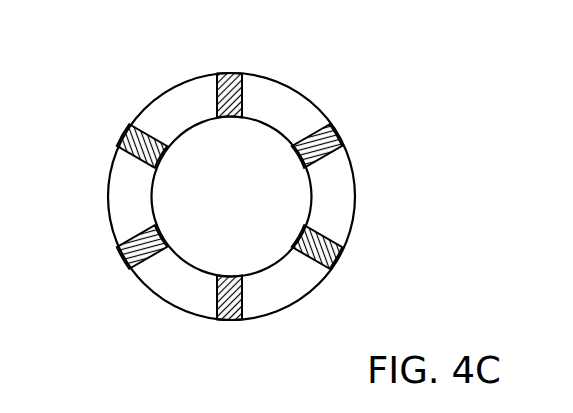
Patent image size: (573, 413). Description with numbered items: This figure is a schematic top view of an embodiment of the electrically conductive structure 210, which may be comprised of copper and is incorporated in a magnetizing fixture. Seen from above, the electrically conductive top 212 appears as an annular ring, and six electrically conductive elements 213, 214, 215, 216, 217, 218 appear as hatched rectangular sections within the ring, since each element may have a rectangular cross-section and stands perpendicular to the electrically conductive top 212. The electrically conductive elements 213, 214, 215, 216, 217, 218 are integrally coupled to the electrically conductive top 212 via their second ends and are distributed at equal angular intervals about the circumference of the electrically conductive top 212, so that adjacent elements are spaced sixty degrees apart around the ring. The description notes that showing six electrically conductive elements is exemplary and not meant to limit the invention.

The conductive structure 210 is at (243, 195).
The electrically conductive top 212 is at (356, 193).
The electrically conductive element 213 is at (226, 74).
The electrically conductive element 214 is at (338, 137).
The electrically conductive element 215 is at (334, 264).
The electrically conductive element 216 is at (230, 317).
The electrically conductive element 217 is at (121, 252).
The electrically conductive element 218 is at (122, 139).